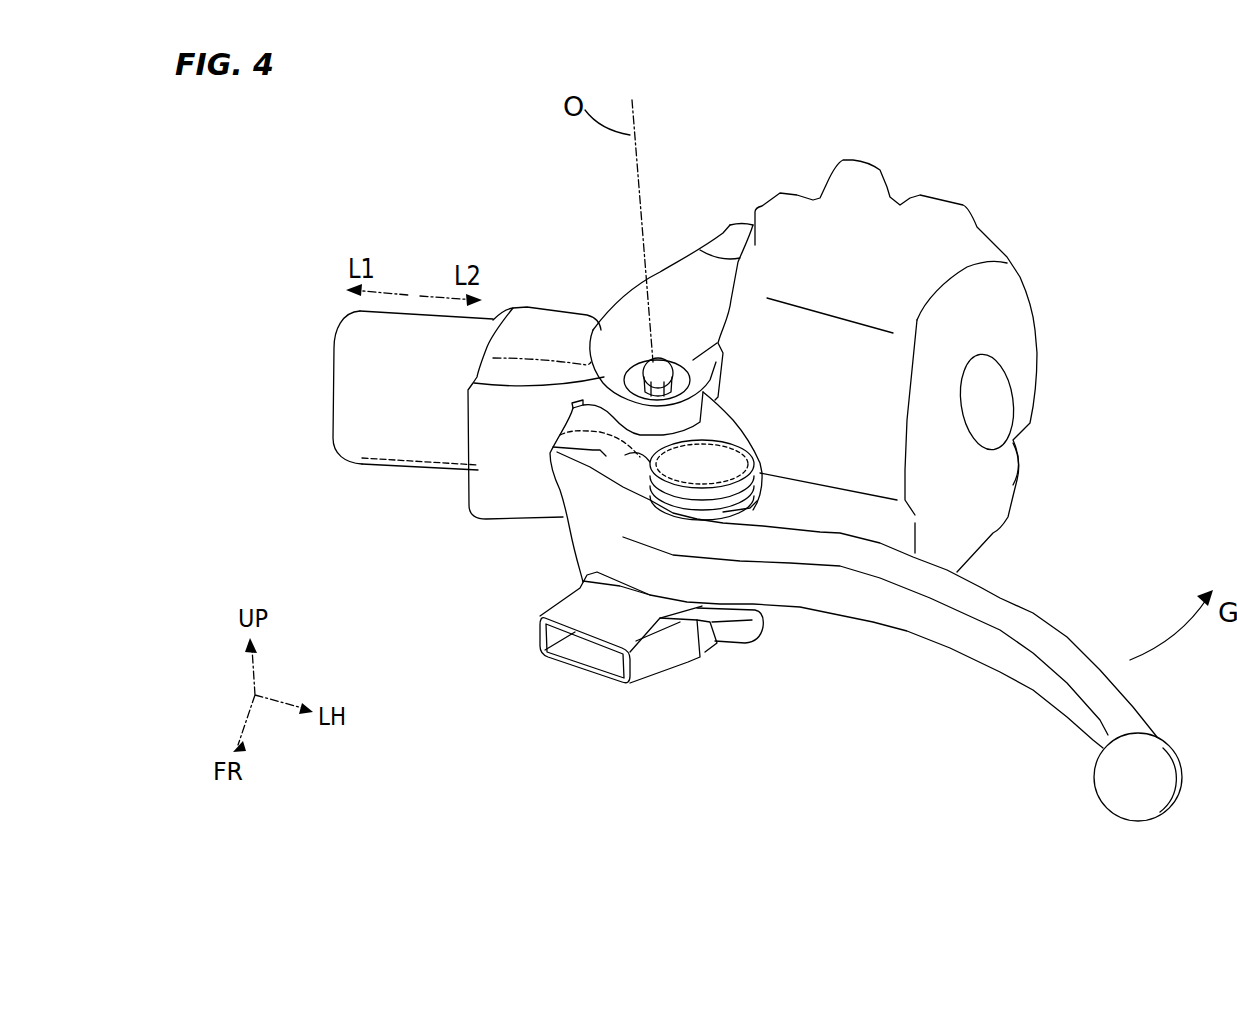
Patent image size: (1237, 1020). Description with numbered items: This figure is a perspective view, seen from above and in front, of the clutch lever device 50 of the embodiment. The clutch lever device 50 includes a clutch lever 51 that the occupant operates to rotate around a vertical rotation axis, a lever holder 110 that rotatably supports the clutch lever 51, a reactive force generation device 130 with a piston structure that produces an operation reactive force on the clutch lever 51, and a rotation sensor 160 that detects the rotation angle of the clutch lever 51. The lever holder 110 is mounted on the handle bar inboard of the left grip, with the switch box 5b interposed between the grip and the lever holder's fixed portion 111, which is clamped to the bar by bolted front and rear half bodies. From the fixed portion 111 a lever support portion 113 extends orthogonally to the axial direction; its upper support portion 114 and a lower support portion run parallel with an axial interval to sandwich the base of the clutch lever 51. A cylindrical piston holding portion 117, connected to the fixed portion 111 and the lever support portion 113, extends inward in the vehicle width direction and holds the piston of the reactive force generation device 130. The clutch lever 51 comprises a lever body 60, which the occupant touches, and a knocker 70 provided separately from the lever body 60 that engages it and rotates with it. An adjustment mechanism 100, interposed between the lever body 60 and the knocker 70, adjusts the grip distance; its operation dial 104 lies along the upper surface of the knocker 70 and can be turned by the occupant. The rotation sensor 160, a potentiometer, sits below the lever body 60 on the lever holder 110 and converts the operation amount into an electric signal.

The clutch lever device 50 is at (380, 197).
The reactive force generation device 130 is at (396, 474).
The piston holding portion 117 is at (513, 487).
The lever holder 110 is at (626, 280).
The fixed portion 111 is at (731, 240).
The lever support portion 113 is at (612, 313).
The upper support portion 114 is at (608, 350).
The switch box 5b is at (1012, 330).
The knocker 70 is at (637, 450).
The operation dial 104 is at (752, 465).
The adjustment mechanism 100 is at (747, 575).
The lever body 60 is at (912, 618).
The clutch lever 51 is at (650, 606).
The rotation sensor 160 is at (713, 650).